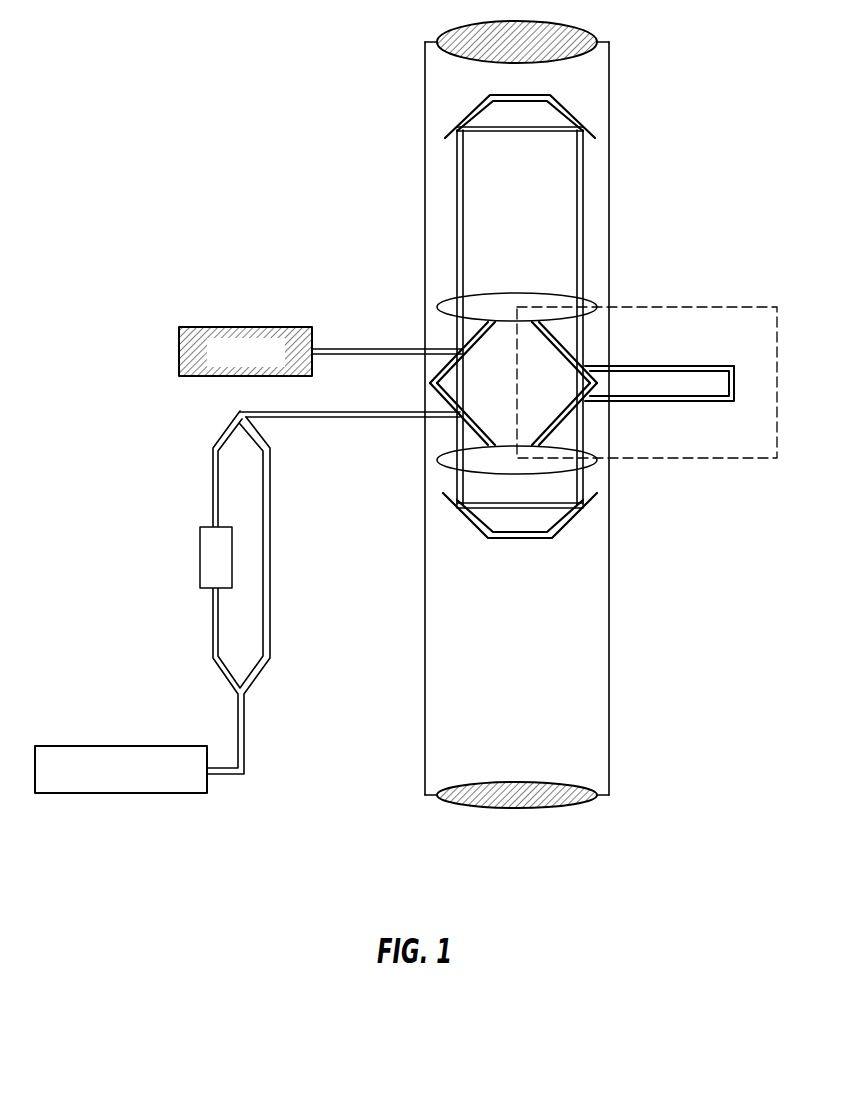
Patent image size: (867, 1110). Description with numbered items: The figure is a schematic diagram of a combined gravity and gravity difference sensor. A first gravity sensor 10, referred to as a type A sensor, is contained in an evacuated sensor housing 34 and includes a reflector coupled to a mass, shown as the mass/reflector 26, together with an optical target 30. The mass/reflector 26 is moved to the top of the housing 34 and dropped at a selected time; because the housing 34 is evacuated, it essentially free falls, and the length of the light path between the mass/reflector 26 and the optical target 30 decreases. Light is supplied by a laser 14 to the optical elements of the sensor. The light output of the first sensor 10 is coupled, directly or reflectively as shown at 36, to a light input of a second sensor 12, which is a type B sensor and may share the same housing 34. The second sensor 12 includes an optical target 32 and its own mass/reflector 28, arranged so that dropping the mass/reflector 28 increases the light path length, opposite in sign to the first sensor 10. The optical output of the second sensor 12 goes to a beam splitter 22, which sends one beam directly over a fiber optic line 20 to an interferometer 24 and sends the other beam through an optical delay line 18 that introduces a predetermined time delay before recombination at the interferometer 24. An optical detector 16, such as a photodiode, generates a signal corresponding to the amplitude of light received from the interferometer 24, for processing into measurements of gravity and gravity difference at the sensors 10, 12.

The first gravity sensor 10 is at (690, 126).
The second sensor 12 is at (630, 687).
The laser 14 is at (180, 350).
The optical detector 16 is at (120, 795).
The optical delay line 18 is at (205, 588).
The fiber optic line 20 is at (270, 492).
The beam splitter 22 is at (228, 428).
The interferometer 24 is at (242, 697).
The mass/reflector 26 is at (573, 112).
The mass/reflector 28 is at (466, 513).
The optical target 30 is at (576, 342).
The optical target 32 is at (458, 424).
The sensor housing 34 is at (610, 197).
The optical coupling 36 is at (687, 366).